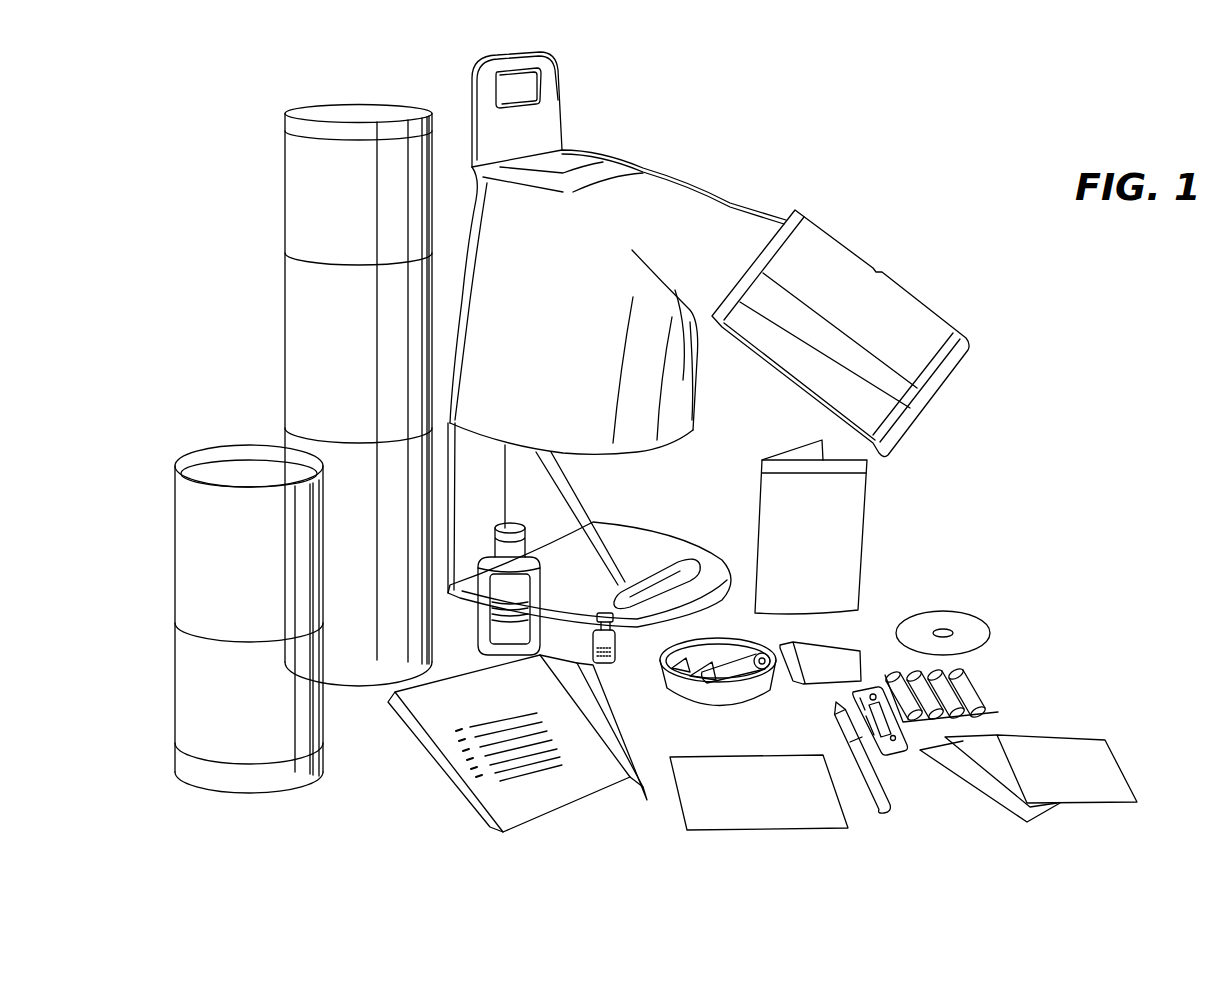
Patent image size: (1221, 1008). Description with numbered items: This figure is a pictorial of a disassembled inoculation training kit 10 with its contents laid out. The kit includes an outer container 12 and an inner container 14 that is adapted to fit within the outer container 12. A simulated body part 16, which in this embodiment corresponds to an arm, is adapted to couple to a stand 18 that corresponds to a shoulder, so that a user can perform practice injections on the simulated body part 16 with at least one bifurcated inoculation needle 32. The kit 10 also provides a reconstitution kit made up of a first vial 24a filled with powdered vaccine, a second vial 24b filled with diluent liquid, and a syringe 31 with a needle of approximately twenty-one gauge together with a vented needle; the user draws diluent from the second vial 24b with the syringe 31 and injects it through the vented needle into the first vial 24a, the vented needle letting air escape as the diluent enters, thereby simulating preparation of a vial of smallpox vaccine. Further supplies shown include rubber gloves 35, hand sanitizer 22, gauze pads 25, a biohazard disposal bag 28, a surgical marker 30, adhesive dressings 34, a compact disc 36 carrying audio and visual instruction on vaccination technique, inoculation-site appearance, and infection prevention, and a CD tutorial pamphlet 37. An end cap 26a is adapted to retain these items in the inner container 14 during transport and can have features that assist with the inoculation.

The inoculation training kit 10 is at (840, 193).
The outer container 12 is at (303, 178).
The inner container 14 is at (249, 470).
The simulated body part 16 is at (840, 333).
The stand 18 is at (645, 185).
The hand sanitizer 22 is at (483, 613).
The first vial 24a is at (611, 638).
The second vial 24b is at (750, 680).
The gauze pads 25 is at (837, 657).
The end cap 26a is at (703, 698).
The biohazard disposal bag 28 is at (717, 802).
The surgical marker 30 is at (865, 783).
The syringe 31 is at (905, 750).
The bifurcated inoculation needle 32 is at (963, 687).
The adhesive dressings 34 is at (1048, 757).
The rubber gloves 35 is at (520, 795).
The compact disc 36 is at (945, 620).
The CD tutorial pamphlet 37 is at (843, 500).